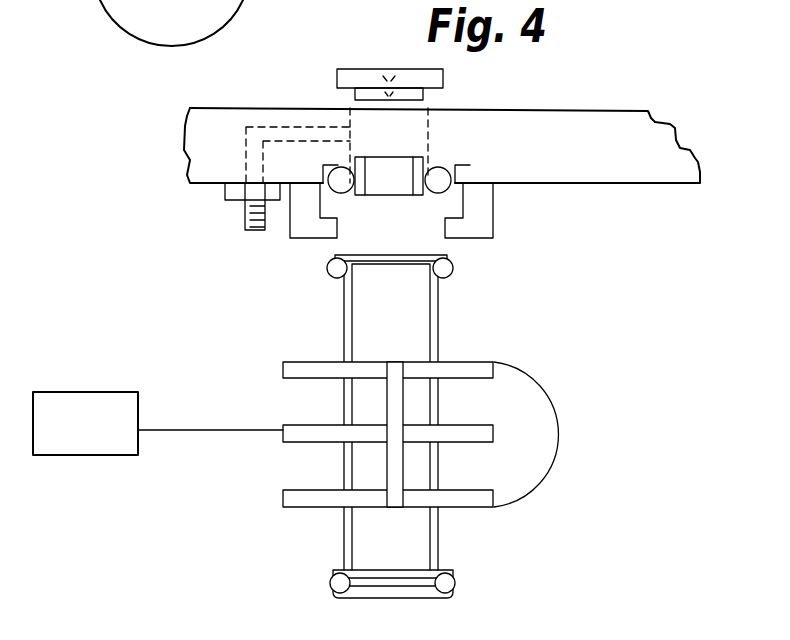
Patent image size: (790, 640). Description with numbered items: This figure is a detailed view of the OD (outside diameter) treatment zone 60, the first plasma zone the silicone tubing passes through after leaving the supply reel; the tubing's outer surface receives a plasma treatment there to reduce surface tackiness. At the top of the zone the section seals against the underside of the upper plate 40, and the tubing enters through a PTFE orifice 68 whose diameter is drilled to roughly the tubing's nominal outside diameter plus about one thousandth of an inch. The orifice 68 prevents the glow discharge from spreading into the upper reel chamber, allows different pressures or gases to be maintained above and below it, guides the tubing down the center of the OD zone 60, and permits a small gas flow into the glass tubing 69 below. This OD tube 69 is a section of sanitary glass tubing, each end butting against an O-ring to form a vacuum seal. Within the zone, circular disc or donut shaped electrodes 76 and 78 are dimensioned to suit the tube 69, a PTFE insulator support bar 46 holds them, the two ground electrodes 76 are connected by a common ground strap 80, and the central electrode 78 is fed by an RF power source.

The upper plate 40 is at (226, 112).
The PTFE orifice 68 is at (372, 57).
The OD zone 60 is at (190, 306).
The glass tubing 69 is at (438, 312).
The ground electrodes 76 is at (313, 372).
The electrode 78 is at (475, 432).
The PTFE insulator support bar 46 is at (402, 476).
The common ground strap 80 is at (568, 410).